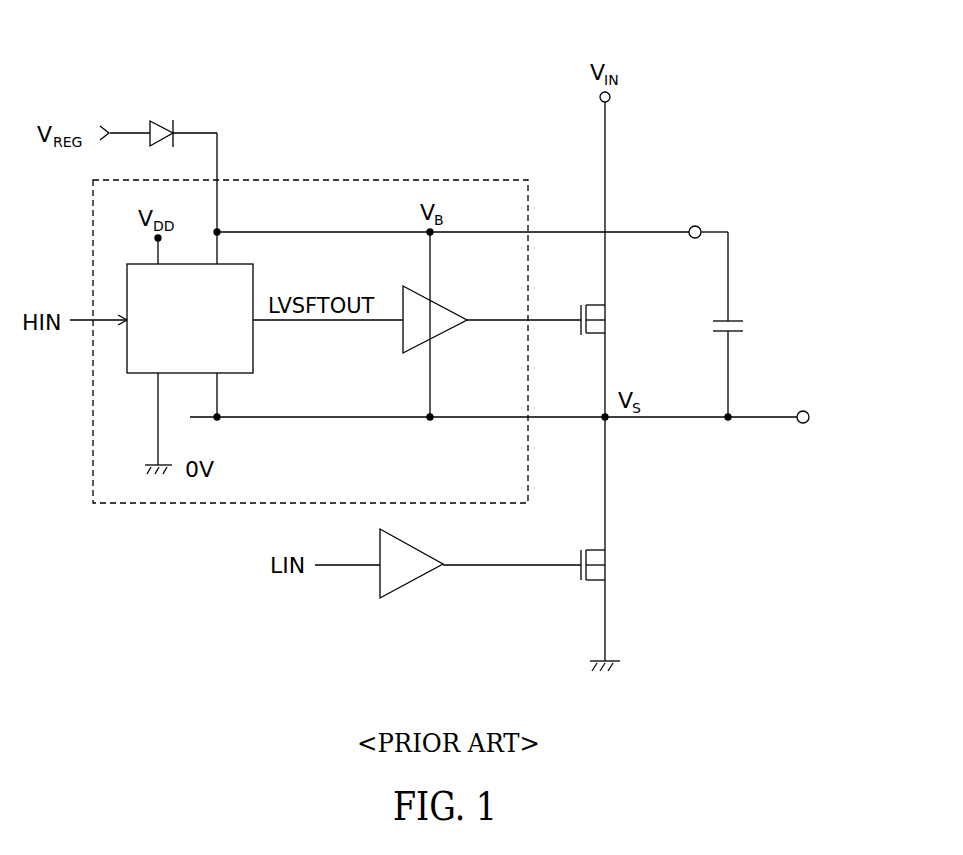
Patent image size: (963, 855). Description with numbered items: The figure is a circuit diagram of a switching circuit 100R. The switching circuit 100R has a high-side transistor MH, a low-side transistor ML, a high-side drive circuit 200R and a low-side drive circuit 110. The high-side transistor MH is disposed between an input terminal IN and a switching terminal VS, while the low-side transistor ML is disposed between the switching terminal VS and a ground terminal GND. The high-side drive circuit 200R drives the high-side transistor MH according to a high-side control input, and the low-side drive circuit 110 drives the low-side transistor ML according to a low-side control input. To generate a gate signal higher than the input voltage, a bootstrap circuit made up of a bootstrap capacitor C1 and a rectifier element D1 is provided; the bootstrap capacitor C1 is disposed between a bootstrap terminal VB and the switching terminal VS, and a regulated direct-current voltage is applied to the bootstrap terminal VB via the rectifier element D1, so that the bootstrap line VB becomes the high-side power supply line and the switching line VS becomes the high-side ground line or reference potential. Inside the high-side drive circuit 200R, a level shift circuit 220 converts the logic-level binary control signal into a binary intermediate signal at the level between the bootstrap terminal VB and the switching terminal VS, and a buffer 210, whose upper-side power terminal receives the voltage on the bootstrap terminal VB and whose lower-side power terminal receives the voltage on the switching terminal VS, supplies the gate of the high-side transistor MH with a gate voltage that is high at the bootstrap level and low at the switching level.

The switching circuit 100R is at (862, 40).
The high-side drive circuit 200R is at (500, 160).
The level shift circuit 220 is at (253, 355).
The buffer 210 is at (472, 289).
The low-side drive circuit 110 is at (405, 585).
The rectifier element D1 is at (162, 122).
The bootstrap capacitor C1 is at (752, 326).
The high-side transistor MH is at (615, 320).
The low-side transistor ML is at (615, 562).
The input terminal IN is at (611, 97).
The bootstrap terminal VB is at (697, 226).
The switching terminal VS is at (809, 411).
The ground terminal GND is at (632, 663).